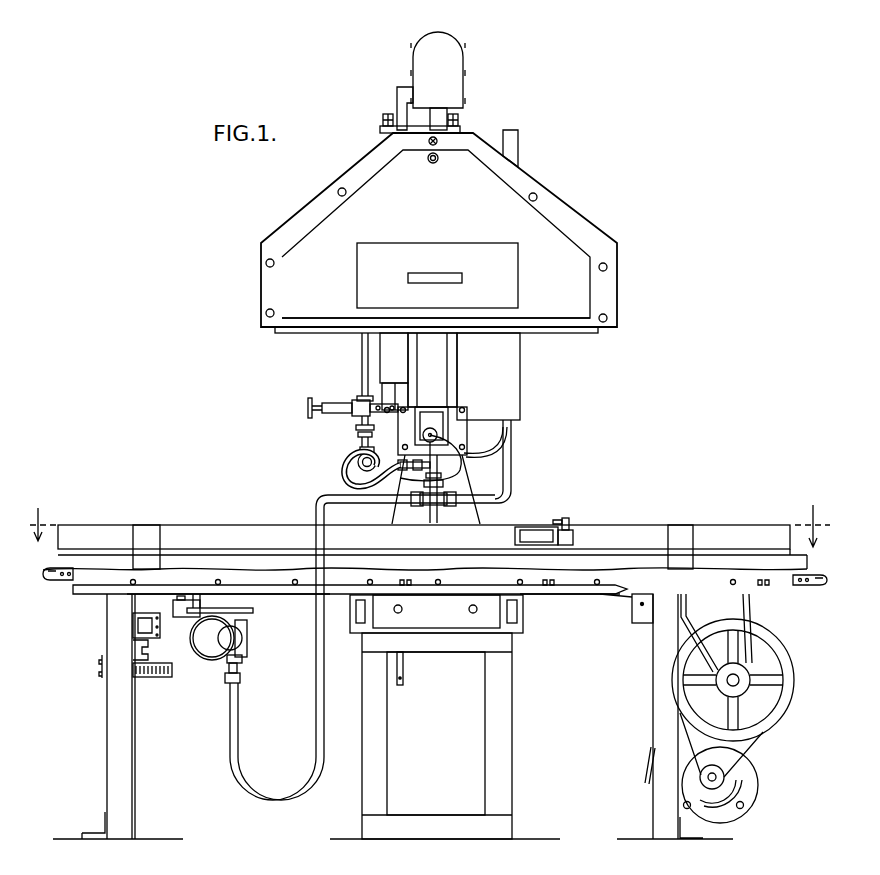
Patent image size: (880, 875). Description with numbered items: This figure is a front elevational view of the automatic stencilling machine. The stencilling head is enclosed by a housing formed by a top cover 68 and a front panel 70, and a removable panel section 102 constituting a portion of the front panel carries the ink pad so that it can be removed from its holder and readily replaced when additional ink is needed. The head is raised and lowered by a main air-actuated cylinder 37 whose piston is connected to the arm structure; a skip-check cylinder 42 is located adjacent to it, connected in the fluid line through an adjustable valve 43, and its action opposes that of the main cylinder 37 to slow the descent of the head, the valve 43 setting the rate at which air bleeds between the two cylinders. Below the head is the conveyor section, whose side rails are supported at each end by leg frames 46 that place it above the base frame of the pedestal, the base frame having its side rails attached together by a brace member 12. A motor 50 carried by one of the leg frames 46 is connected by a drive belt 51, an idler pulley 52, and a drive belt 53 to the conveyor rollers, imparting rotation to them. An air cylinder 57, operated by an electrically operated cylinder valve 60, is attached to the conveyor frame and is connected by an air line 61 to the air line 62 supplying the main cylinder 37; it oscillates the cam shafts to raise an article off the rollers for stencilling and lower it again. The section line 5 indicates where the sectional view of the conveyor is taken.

The section line 5- 5 is at (430, 518).
The brace member 12 is at (458, 622).
The main air-actuated cylinder 37 is at (438, 370).
The skip-check cylinder 42 is at (387, 352).
The adjustable valve 43 is at (306, 405).
The leg frames 46 is at (115, 766).
The motor 50 is at (747, 790).
The drive belt 51 is at (755, 747).
The idler pulley 52 is at (783, 653).
The drive belt 53 is at (613, 596).
The air cylinder 57 is at (209, 657).
The electrically operated cylinder valve 60 is at (242, 661).
The air line 61 is at (318, 751).
The air line 62 is at (512, 445).
The top cover 68 is at (535, 183).
The front panel 70 is at (484, 213).
The removable panel section 102 is at (395, 253).